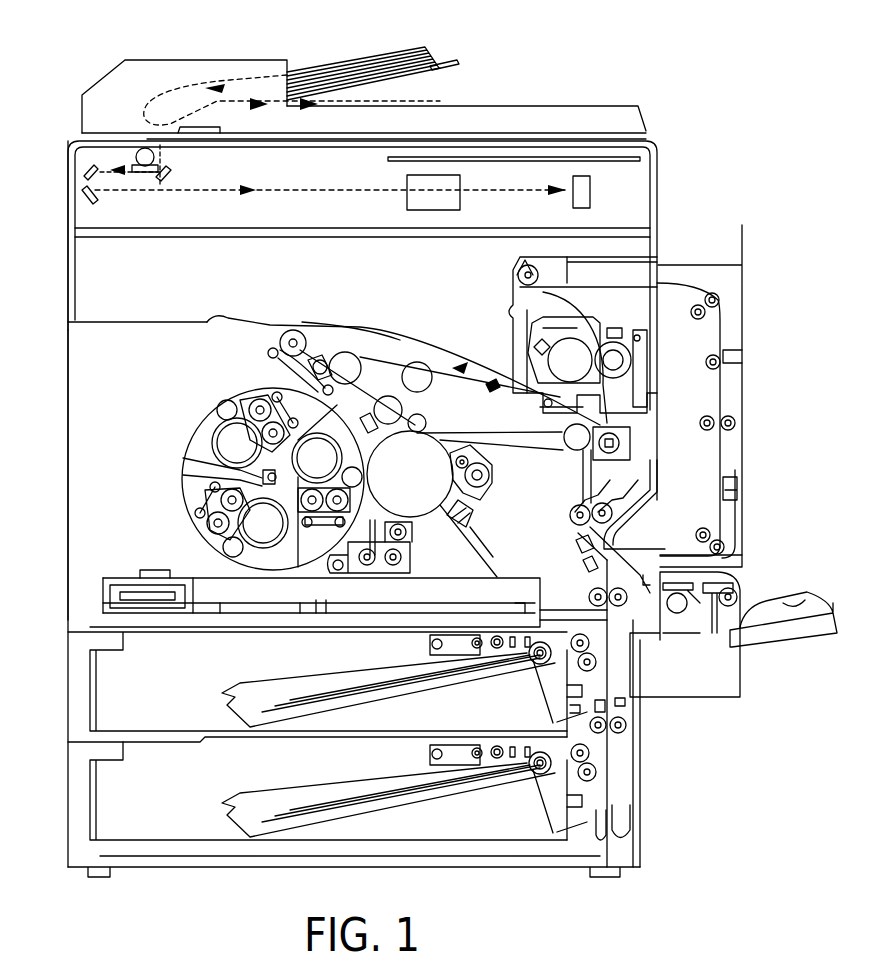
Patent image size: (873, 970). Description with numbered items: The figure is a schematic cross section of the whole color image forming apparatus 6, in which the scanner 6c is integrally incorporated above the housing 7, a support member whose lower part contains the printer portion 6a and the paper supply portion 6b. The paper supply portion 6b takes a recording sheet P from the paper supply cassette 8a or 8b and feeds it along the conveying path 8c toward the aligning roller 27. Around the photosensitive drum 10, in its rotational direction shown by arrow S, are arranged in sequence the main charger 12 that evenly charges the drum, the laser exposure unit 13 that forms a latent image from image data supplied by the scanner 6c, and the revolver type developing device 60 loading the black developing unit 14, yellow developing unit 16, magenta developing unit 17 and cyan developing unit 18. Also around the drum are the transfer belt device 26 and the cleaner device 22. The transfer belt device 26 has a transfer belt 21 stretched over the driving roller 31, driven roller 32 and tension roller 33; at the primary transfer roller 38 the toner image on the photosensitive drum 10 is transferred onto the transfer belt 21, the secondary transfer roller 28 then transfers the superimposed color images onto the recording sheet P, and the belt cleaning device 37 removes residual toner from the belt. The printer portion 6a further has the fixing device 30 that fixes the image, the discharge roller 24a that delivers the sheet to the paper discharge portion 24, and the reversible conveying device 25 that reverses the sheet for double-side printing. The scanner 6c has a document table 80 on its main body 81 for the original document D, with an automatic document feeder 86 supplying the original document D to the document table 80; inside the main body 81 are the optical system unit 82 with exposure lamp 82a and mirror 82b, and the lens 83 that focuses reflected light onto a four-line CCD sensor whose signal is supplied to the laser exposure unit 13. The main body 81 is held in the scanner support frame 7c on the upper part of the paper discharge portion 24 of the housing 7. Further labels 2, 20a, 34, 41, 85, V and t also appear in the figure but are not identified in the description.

The image reading section 2 is at (381, 141).
The color image forming apparatus 6 is at (737, 180).
The printer portion 6a is at (80, 443).
The paper supply portion 6b is at (72, 765).
The scanner 6c is at (88, 208).
The housing 7 is at (68, 366).
The scanner support frame 7c is at (75, 175).
The paper supply cassette 8a is at (90, 695).
The paper supply cassette 8b is at (90, 815).
The conveying path 8c is at (638, 625).
The photosensitive drum 10 is at (478, 445).
The main charger 12 is at (444, 543).
The laser exposure unit 13 is at (103, 595).
The black developing unit 14 is at (416, 550).
The yellow developing unit 16 is at (246, 402).
The magenta developing unit 17 is at (215, 535).
The cyan developing unit 18 is at (327, 522).
The developing roller 20a is at (200, 470).
The transfer belt 21 is at (387, 350).
The cleaner device 22 is at (498, 468).
The paper discharge portion 24 is at (302, 322).
The discharge roller 24a is at (518, 274).
The reversible conveying device 25 is at (728, 392).
The transfer belt device 26 is at (368, 347).
The aligning roller 27 is at (637, 498).
The secondary transfer roller 28 is at (632, 438).
The fixing device 30 is at (638, 350).
The driving roller 31 is at (560, 424).
The driven roller 32 is at (340, 352).
The tension roller 33 is at (417, 362).
The belt cleaner 34 is at (494, 385).
The belt cleaning device 37 is at (283, 345).
The primary transfer roller 38 is at (422, 420).
The document tray 41 is at (455, 60).
The revolver type developing device 60 is at (197, 405).
The document table 80 is at (475, 128).
The main body 81 is at (660, 192).
The optical system unit 82 is at (236, 172).
The exposure lamp 82a is at (162, 167).
The mirror 82b is at (162, 183).
The lens 83 is at (458, 198).
The image sensor (CCD) 85 is at (593, 193).
The automatic document feeder 86 is at (232, 58).
The original document D is at (380, 52).
The recording sheet P is at (357, 693).
The arrow s S is at (380, 455).
The belt moving direction V is at (465, 355).
The revolver rotation direction t is at (177, 425).